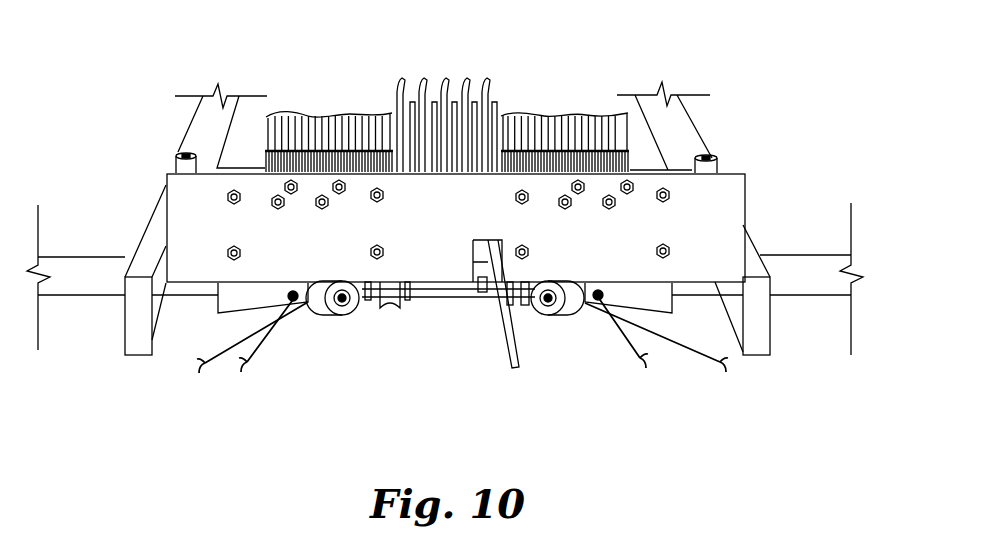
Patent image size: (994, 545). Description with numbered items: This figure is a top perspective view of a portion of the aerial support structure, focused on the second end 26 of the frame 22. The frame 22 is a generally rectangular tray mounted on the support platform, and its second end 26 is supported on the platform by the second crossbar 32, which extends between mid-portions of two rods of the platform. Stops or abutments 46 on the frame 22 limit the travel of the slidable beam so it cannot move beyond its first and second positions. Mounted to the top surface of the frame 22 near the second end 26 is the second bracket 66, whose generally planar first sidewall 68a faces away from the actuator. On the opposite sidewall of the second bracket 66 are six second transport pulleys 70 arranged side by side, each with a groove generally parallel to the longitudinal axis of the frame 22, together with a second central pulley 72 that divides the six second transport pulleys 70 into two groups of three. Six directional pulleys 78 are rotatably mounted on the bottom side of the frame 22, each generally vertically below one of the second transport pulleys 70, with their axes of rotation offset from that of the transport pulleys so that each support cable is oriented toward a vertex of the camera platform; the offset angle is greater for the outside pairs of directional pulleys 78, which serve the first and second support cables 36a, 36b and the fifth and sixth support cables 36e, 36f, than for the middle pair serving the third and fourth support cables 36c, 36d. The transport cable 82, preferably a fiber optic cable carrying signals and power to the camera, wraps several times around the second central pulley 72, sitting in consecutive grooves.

The frame 22 is at (192, 134).
The second end 26 is at (697, 134).
The second crossbar 32 is at (808, 285).
The first support cable 36a is at (625, 113).
The second support cable 36b is at (571, 114).
The third support cable 36c is at (528, 115).
The fourth support cable 36d is at (365, 117).
The fifth support cable 36e is at (324, 126).
The sixth support cable 36f is at (270, 118).
The stop 46 is at (176, 154).
The second bracket 66 is at (715, 235).
The first sidewall 68a is at (322, 263).
The second transport pulley 70 is at (267, 152).
The second central pulley 72 is at (476, 92).
The directional pulley 78 is at (335, 314).
The transport cable 82 is at (422, 80).